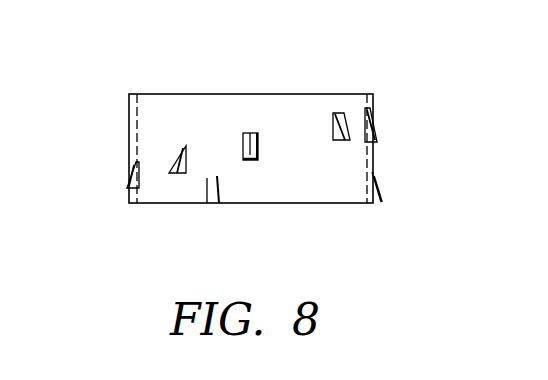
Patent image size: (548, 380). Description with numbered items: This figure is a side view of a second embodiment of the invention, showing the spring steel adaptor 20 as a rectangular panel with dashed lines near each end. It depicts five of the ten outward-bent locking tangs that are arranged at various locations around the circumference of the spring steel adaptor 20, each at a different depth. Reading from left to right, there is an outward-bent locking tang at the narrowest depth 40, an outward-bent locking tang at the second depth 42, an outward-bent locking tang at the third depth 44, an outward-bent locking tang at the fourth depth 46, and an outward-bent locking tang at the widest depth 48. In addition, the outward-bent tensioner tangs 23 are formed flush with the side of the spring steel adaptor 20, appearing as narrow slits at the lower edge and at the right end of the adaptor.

The spring steel adaptor 20 is at (196, 85).
The outward-bent tensioner tangs 23 is at (208, 205).
The outward-bent locking tang at the narrowest depth 40 is at (118, 179).
The outward-bent locking tang at the second depth 42 is at (175, 148).
The outward-bent locking tang at the third depth 44 is at (250, 133).
The outward-bent locking tang at the fourth depth 46 is at (343, 120).
The outward-bent locking tang at the widest depth 48 is at (378, 128).